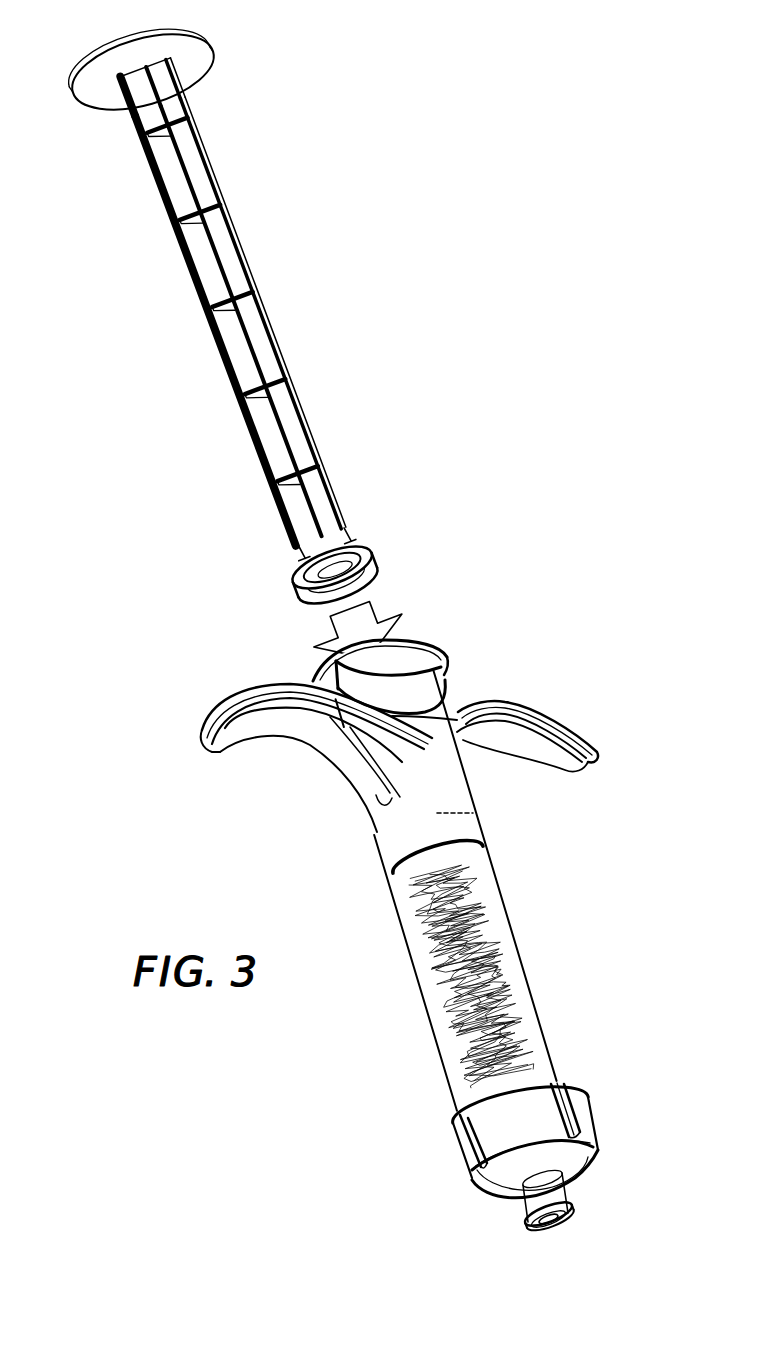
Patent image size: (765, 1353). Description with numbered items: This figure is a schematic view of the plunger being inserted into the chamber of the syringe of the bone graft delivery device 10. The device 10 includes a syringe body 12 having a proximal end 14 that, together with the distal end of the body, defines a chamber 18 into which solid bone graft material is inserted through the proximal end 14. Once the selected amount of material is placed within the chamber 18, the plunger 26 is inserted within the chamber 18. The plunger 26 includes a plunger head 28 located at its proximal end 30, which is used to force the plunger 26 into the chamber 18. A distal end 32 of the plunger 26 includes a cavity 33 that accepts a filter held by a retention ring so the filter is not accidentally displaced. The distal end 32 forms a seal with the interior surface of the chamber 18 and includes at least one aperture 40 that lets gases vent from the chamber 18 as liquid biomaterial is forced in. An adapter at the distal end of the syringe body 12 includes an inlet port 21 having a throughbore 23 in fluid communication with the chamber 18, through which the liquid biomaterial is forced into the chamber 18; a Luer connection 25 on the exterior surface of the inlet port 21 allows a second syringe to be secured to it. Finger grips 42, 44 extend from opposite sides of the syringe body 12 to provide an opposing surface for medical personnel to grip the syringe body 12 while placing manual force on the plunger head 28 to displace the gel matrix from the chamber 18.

The bone graft delivery device 10 is at (240, 862).
The syringe body 12 is at (413, 963).
The proximal end 14 is at (381, 672).
The chamber 18 is at (473, 813).
The inlet port 21 is at (549, 1201).
The throughbore 23 is at (549, 1218).
The Luer connection 25 is at (549, 1217).
The plunger 26 is at (244, 327).
The plunger head 28 is at (141, 69).
The proximal end 30 is at (151, 87).
The distal end 32 is at (334, 575).
The cavity 33 is at (340, 587).
The aperture 40 is at (332, 568).
The finger grip 42 is at (213, 737).
The finger grip 44 is at (578, 764).